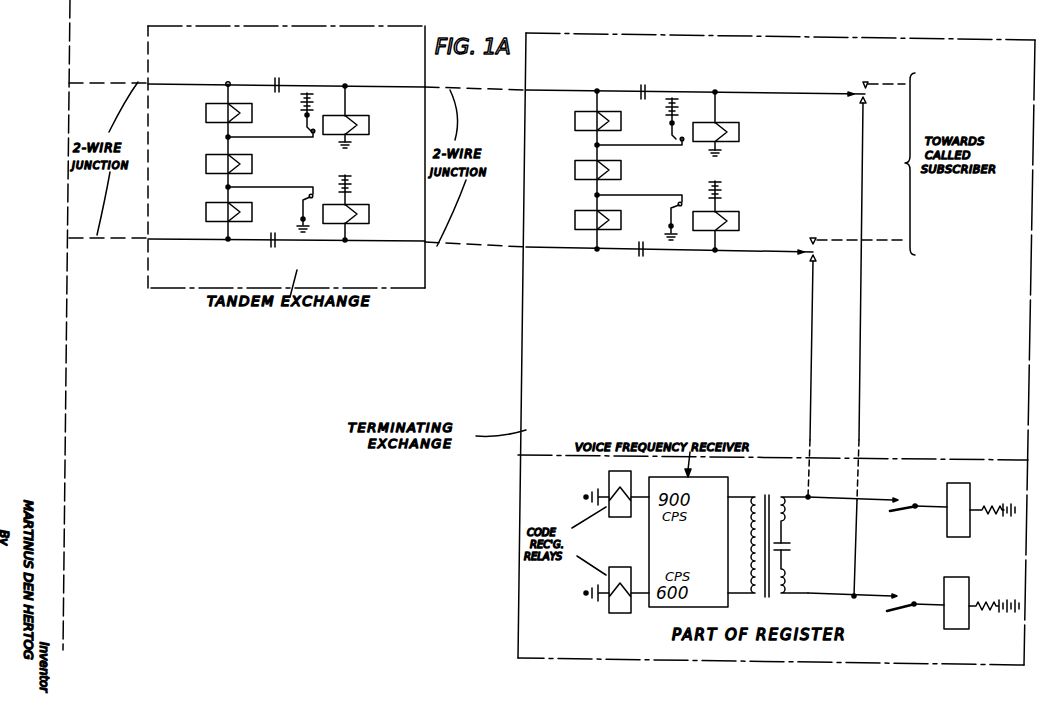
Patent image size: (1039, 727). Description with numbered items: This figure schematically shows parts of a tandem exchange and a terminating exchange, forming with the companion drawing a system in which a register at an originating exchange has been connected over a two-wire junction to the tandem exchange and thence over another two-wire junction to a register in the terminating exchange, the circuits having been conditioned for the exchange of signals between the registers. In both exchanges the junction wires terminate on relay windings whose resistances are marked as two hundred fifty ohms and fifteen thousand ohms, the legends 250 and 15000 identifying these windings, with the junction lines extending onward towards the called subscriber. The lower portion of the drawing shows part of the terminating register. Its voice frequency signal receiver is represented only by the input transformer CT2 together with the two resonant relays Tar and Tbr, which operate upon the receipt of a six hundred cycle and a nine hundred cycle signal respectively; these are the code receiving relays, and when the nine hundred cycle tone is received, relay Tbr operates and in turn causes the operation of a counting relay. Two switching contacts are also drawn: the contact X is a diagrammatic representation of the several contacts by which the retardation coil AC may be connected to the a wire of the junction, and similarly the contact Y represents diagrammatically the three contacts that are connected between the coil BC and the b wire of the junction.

The 250 ohm relay winding 250 is at (464, 171).
The 15000 ohm relay winding 15000 is at (385, 162).
The a wire a is at (876, 340).
The b wire b is at (851, 368).
The resonant relay Tbr is at (616, 504).
The resonant relay Tar is at (616, 581).
The input transformer CT2 is at (768, 537).
The contact X is at (915, 598).
The contact Y is at (918, 500).
The coil BC is at (981, 509).
The retardation coil AC is at (981, 609).